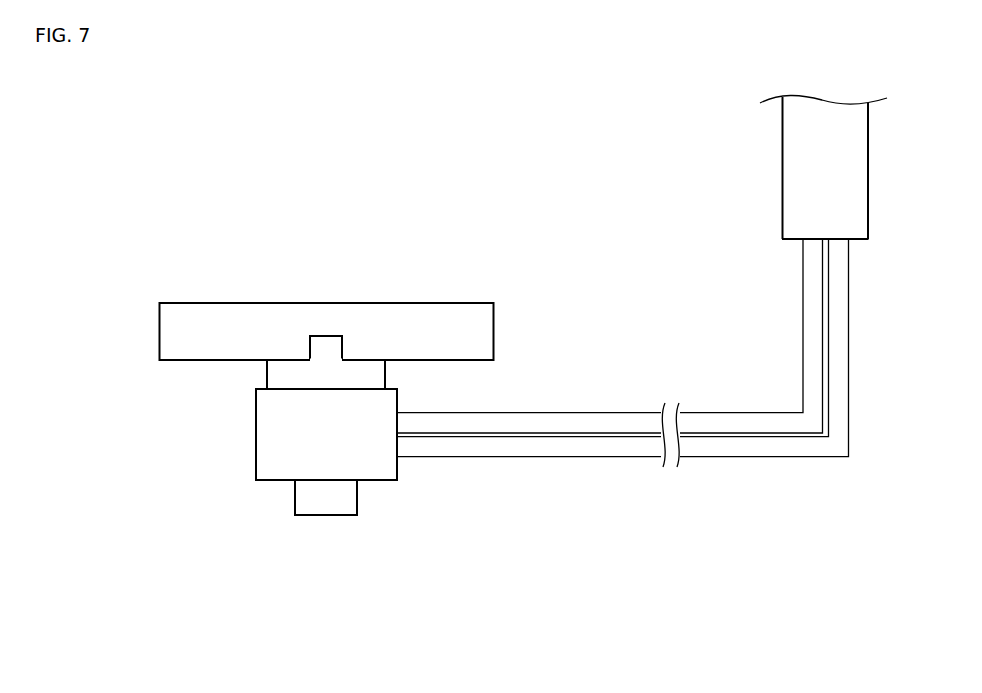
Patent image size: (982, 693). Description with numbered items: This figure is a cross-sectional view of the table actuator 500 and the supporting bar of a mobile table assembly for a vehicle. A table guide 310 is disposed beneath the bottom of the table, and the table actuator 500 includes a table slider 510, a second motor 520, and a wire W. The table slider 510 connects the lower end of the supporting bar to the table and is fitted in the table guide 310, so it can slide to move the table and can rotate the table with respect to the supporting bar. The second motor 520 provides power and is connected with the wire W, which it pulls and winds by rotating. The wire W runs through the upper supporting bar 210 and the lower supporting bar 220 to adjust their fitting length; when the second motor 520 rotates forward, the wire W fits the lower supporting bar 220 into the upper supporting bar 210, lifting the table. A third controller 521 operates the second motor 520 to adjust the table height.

The table guide 310 is at (223, 308).
The table actuator 500 is at (121, 397).
The table slider 510 is at (268, 373).
The second motor 520 is at (270, 453).
The third controller 521 is at (323, 507).
The upper supporting bar 210 is at (793, 179).
The lower supporting bar 220 is at (803, 317).
The wire W is at (562, 437).